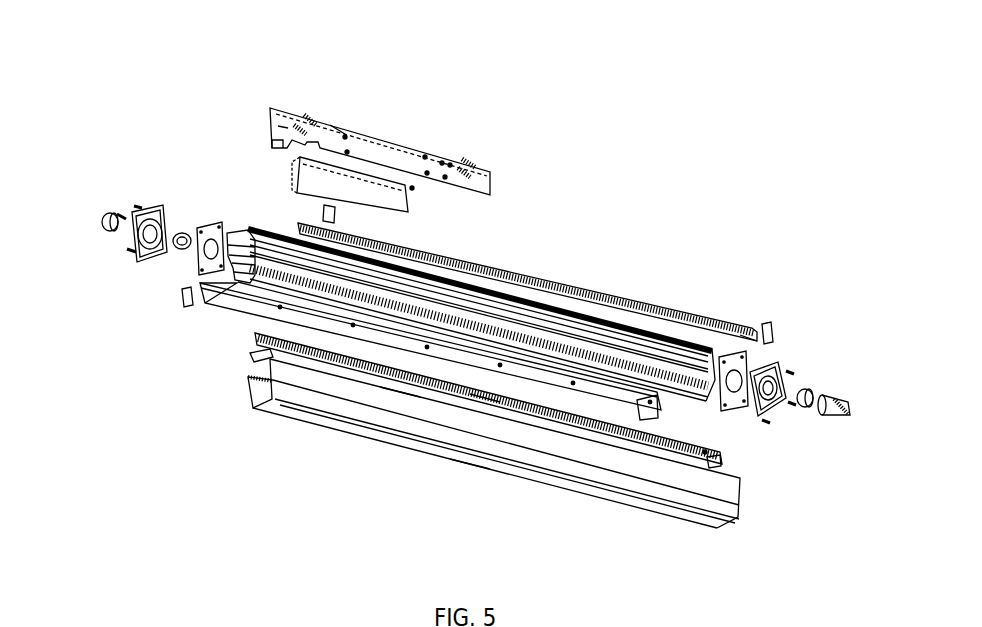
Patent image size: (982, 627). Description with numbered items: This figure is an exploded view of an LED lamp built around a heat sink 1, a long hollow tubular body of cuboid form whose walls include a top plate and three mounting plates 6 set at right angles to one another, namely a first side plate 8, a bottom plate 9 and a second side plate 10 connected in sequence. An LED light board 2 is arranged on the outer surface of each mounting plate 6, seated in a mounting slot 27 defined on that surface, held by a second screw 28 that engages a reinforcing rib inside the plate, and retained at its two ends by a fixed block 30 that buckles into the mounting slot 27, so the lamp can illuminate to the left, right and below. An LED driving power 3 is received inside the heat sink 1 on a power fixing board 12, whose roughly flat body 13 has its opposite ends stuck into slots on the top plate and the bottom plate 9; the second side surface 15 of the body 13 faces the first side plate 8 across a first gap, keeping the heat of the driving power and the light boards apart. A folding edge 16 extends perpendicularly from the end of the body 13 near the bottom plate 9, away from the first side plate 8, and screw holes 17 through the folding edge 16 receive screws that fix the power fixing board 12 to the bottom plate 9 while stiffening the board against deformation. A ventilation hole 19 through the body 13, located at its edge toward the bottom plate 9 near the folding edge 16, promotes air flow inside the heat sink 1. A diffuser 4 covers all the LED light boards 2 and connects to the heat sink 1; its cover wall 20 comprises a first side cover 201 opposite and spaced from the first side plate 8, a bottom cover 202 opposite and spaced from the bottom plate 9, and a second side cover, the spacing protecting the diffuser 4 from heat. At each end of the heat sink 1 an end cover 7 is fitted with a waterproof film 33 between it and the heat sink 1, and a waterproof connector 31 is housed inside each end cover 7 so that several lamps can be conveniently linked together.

The heat sink 1 is at (272, 232).
The LED light board 2 is at (630, 300).
The LED driving power 3 is at (360, 188).
The diffuser 4 is at (494, 464).
The mounting plate 6 is at (227, 240).
The end cover 7 is at (157, 210).
The first side plate 8 is at (507, 313).
The bottom plate 9 is at (236, 282).
The second side plate 10 is at (195, 278).
The power fixing board 12 is at (408, 150).
The body 13 is at (337, 130).
The second side surface 15 is at (438, 165).
The folding edge 16 is at (282, 140).
The screw hole 17 is at (277, 143).
The ventilation hole 19 is at (307, 117).
The cover wall 20 is at (275, 408).
The mounting slot 27 is at (708, 347).
The second screw 28 is at (487, 400).
The fixed block 30 is at (182, 297).
The waterproof connector 31 is at (174, 228).
The waterproof film 33 is at (737, 400).
The first side cover 201 is at (387, 403).
The bottom cover 202 is at (462, 455).